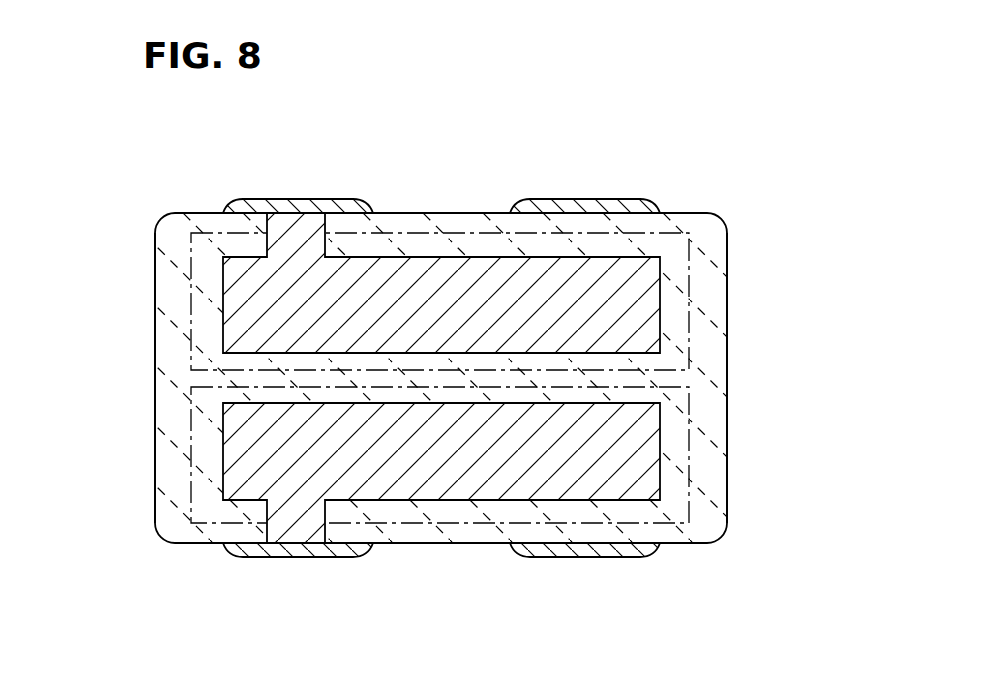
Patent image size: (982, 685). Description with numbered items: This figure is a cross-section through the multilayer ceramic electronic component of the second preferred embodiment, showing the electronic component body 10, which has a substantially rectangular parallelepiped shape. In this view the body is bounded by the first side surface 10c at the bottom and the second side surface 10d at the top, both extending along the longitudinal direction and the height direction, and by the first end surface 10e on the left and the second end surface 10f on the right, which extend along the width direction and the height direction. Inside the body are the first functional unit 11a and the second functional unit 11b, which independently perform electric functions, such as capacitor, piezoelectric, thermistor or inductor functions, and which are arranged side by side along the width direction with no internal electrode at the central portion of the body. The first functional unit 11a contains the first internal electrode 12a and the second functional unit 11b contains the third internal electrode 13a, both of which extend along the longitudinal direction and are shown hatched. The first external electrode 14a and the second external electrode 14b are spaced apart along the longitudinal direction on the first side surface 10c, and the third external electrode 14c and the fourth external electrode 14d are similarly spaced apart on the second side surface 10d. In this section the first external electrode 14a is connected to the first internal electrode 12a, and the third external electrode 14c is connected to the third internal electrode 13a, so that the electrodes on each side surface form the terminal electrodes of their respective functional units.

The electronic component body 10 is at (728, 330).
The first side surface 10c is at (422, 545).
The second side surface 10d is at (402, 213).
The first end surface 10e is at (155, 352).
The second end surface 10f is at (727, 417).
The first functional unit 11a is at (690, 507).
The second functional unit 11b is at (729, 271).
The first internal electrode 12a is at (660, 437).
The third internal electrode 13a is at (662, 263).
The first external electrode 14a is at (305, 558).
The second external electrode 14b is at (590, 558).
The third external electrode 14c is at (270, 200).
The fourth external electrode 14d is at (560, 199).